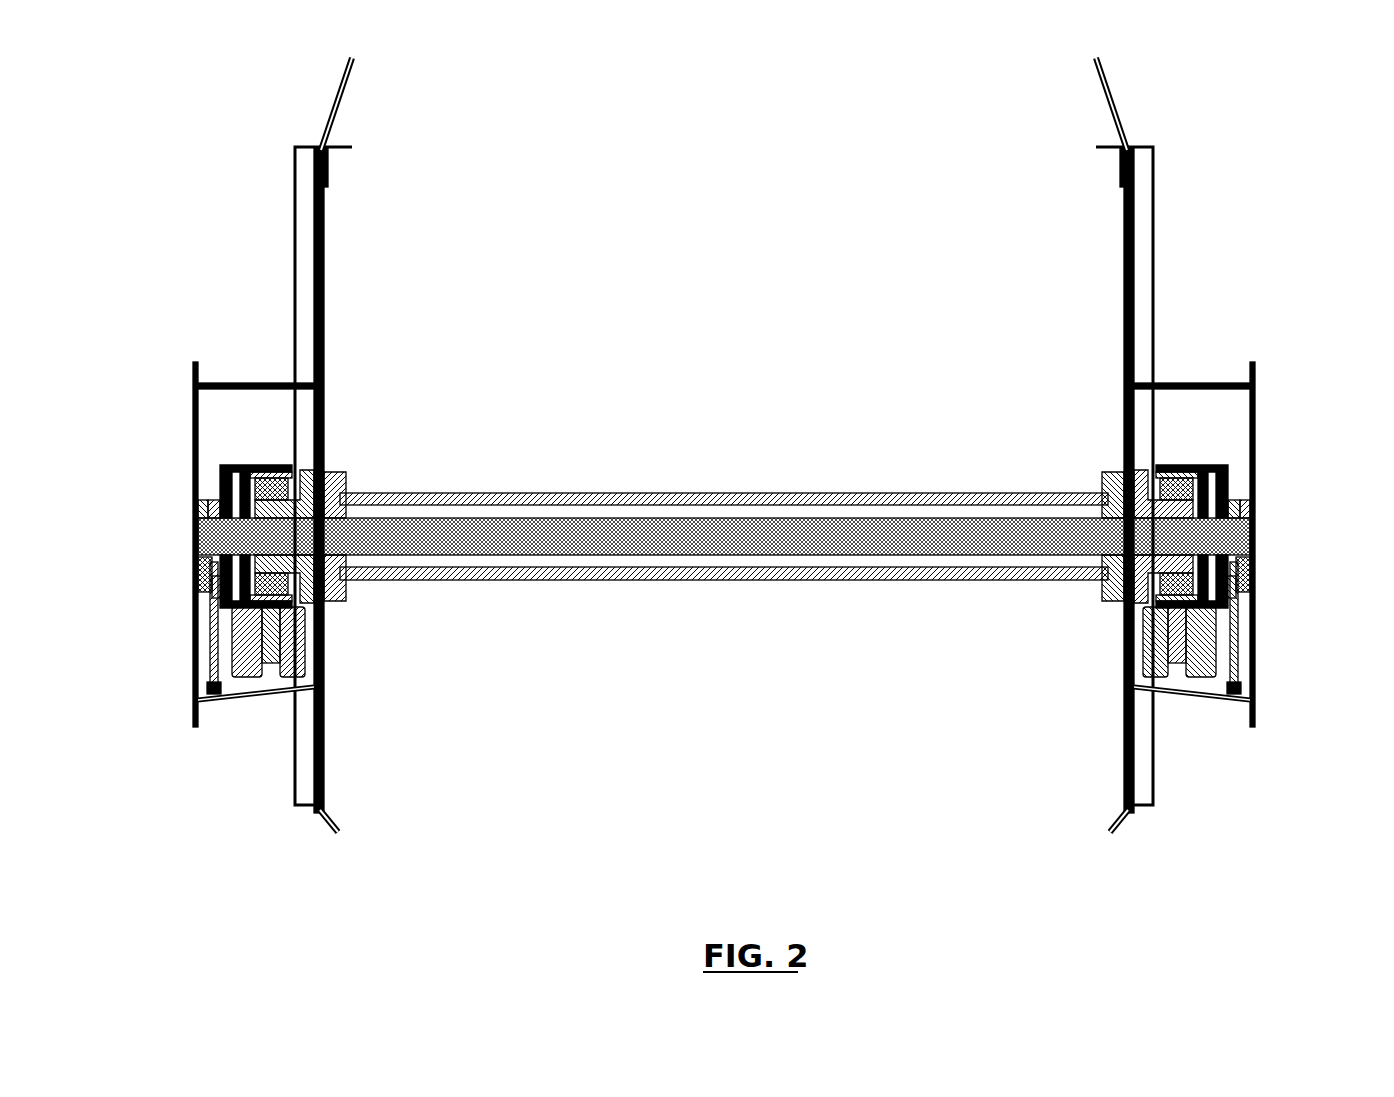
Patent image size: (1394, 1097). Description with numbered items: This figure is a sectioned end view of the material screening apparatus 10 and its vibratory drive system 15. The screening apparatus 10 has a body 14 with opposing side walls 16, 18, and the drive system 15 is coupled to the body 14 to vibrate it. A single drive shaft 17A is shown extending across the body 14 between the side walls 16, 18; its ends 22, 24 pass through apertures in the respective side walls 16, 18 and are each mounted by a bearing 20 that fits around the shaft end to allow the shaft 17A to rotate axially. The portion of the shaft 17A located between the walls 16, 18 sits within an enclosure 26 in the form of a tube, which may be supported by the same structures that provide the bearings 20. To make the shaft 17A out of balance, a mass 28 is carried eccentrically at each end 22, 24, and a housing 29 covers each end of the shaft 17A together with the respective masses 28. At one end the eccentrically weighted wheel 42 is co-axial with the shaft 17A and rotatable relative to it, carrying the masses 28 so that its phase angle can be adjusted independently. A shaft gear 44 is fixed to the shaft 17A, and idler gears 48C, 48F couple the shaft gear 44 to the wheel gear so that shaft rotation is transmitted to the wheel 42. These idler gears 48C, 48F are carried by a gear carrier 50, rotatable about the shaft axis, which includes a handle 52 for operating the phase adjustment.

The material screening apparatus 10 is at (1178, 125).
The body 14 is at (282, 764).
The vibratory drive system 15 is at (1222, 428).
The side wall 16 is at (1125, 217).
The drive shaft 17A is at (673, 530).
The side wall 18 is at (316, 235).
The bearing 20 is at (270, 478).
The shaft end 22 is at (1223, 543).
The shaft end 24 is at (213, 547).
The enclosure 26 is at (546, 493).
The mass 28 is at (307, 653).
The housing 29 is at (193, 420).
The wheel 42 is at (232, 467).
The shaft gear 44 is at (200, 505).
The idler gear 48C is at (200, 588).
The idler gear 48F is at (215, 597).
The gear carrier 50 is at (213, 502).
The handle 52 is at (210, 672).